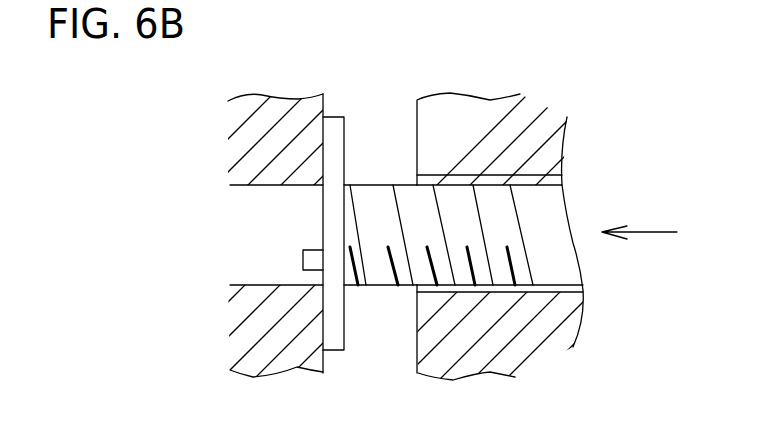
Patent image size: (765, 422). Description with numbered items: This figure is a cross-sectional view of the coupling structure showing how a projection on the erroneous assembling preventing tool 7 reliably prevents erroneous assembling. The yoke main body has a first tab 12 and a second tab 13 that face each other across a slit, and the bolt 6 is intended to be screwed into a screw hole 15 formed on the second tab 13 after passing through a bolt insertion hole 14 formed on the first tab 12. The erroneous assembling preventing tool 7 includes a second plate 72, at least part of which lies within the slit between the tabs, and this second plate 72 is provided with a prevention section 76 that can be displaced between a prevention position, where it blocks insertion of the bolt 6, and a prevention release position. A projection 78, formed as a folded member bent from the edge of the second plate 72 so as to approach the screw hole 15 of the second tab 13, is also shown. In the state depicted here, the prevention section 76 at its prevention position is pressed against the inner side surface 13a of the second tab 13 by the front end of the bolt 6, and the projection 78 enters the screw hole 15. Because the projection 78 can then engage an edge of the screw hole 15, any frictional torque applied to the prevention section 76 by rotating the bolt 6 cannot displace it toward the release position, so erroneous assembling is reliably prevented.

The bolt 6 is at (548, 243).
The erroneous assembling preventing tool 7 is at (350, 145).
The first tab 12 is at (468, 108).
The second tab 13 is at (281, 108).
The inner side surface of the second tab 13a is at (325, 325).
The bolt insertion hole 14 is at (560, 188).
The screw hole 15 is at (255, 186).
The second plate 72 is at (336, 340).
The prevention section 76 is at (344, 228).
The projection 78 is at (307, 258).